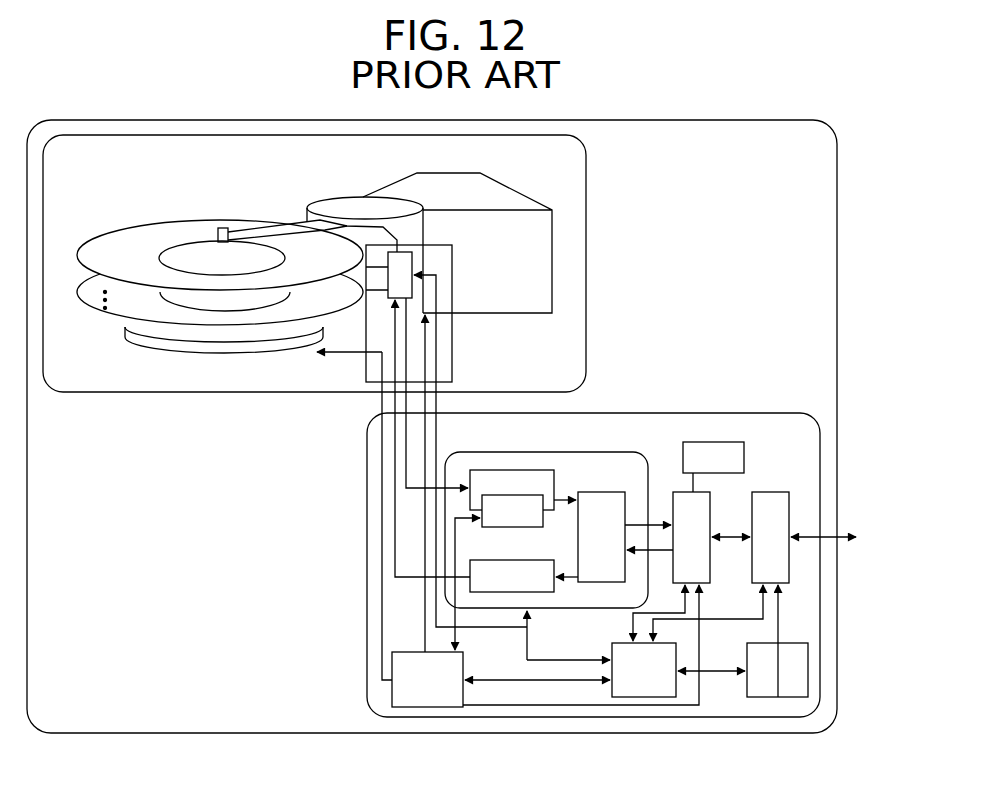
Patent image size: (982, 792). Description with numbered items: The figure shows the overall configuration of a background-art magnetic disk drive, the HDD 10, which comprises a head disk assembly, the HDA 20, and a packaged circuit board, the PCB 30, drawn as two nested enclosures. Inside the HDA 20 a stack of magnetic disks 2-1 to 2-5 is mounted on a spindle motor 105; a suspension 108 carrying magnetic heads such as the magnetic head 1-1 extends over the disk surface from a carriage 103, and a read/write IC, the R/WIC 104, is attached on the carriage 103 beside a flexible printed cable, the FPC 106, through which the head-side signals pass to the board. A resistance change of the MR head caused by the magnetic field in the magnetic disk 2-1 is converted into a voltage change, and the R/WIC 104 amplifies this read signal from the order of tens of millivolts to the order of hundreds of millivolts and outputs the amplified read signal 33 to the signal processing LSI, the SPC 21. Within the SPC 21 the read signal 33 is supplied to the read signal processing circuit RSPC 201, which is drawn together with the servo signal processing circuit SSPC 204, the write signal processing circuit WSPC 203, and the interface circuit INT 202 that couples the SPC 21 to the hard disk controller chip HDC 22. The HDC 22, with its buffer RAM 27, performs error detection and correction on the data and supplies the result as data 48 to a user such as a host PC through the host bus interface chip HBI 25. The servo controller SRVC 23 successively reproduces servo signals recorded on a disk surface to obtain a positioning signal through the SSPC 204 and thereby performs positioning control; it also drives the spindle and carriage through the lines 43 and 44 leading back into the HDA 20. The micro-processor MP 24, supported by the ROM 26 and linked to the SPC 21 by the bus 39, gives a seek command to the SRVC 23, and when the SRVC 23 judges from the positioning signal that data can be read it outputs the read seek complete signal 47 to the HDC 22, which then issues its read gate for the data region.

The magnetic disk drive (HDD) 10 is at (655, 120).
The head disk assembly (HDA) 20 is at (587, 233).
The packaged circuit board (PCB) 30 is at (650, 413).
The magnetic disk 2-1 is at (123, 225).
The magnetic disk 2-5 is at (93, 317).
The magnetic head 1-1 is at (217, 230).
The suspension 108 is at (277, 225).
The carriage 103 is at (323, 200).
The spindle motor 105 is at (253, 355).
The read/write IC (R/WIC) 104 is at (412, 284).
The flexible printed cable (FPC) 106 is at (452, 376).
The signal processing LSI (SPC) 21 is at (490, 450).
The read signal processing circuit (RSPC) 201 is at (554, 485).
The servo signal processing circuit (SSPC) 204 is at (497, 527).
The write signal processing circuit (WSPC) 203 is at (535, 592).
The interface circuit (INT) 202 is at (632, 500).
The hard disk controller chip (HDC) 22 is at (710, 555).
The host bus interface chip (HBI) 25 is at (789, 508).
The buffer RAM 27 is at (748, 458).
The servo controller (SRVC) 23 is at (427, 707).
The micro-processor (MP) 24 is at (640, 697).
The ROM 26 is at (780, 697).
The read signal 33 is at (407, 495).
The spindle motor drive line 43 is at (382, 642).
The voice coil motor drive line 44 is at (425, 597).
The read seek complete signal (RD_SK_COMP) 47 is at (503, 707).
The signal processing circuit to MP bus 39 is at (563, 660).
The data 48 is at (832, 545).